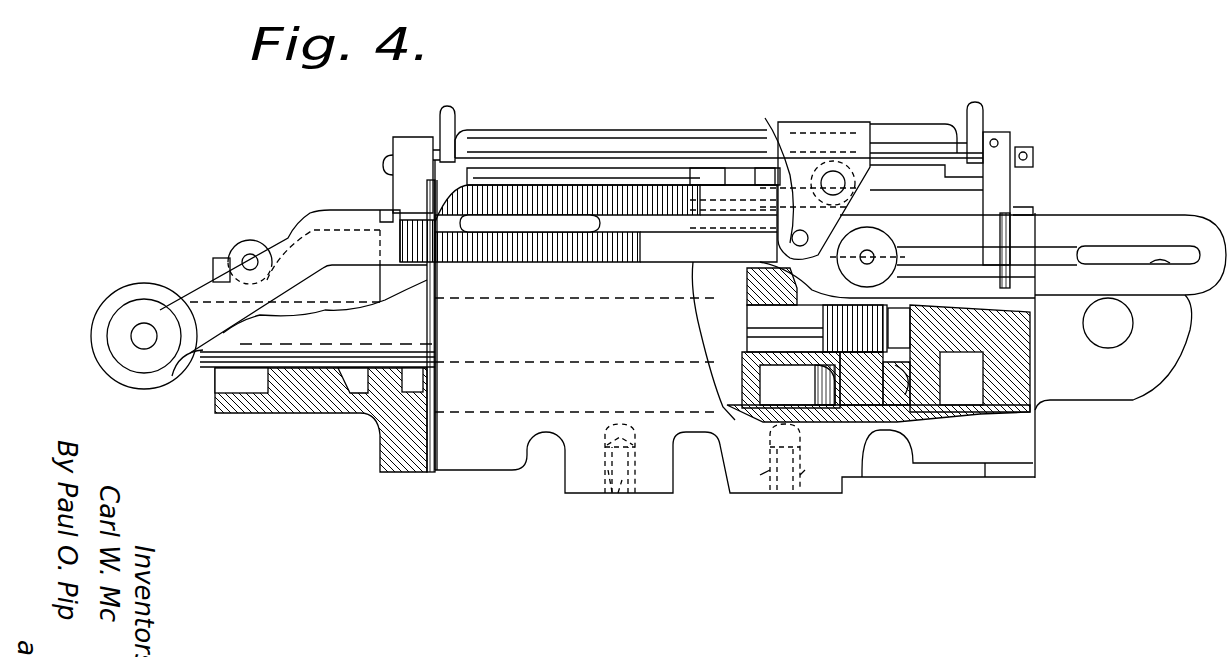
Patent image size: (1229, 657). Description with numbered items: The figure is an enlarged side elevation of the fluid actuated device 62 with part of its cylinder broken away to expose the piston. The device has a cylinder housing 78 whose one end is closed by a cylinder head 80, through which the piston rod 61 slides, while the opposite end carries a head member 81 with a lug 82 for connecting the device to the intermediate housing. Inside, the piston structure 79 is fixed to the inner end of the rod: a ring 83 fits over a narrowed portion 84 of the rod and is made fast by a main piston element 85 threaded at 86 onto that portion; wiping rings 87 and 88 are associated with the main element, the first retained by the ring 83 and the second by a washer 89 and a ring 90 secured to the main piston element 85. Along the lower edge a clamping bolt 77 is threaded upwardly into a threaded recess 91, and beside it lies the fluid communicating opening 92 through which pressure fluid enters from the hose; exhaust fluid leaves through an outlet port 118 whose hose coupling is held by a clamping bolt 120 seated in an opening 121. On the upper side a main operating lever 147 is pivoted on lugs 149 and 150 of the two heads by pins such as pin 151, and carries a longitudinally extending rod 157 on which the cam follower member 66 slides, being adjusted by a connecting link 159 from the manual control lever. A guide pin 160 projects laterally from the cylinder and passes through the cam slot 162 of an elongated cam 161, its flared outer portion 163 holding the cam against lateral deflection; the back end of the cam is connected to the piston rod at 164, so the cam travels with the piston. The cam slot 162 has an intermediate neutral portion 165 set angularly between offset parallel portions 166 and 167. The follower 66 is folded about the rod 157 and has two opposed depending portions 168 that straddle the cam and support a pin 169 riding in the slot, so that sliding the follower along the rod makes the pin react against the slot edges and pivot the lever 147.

The piston rod 61 is at (198, 370).
The fluid actuated device 62 is at (437, 470).
The cam follower member 66 is at (838, 108).
The clamping bolt 77 is at (780, 492).
The cylinder housing 78 is at (485, 450).
The piston structure 79 is at (1035, 332).
The cylinder head 80 is at (380, 462).
The head member 81 is at (1025, 447).
The lug 82 is at (1143, 396).
The ring 83 is at (760, 372).
The narrowed portion 84 is at (750, 323).
The main piston element 85 is at (866, 422).
The threads 86 is at (880, 305).
The wiping ring 87 is at (845, 445).
The wiping ring 88 is at (895, 421).
The washer 89 is at (900, 385).
The ring 90 is at (920, 372).
The threaded recess 91 is at (768, 482).
The fluid communicating opening 92 is at (805, 482).
The outlet port 118 is at (603, 435).
The clamping bolt 120 is at (615, 495).
The opening 121 is at (590, 490).
The main operating lever 147 is at (513, 130).
The lug 149 is at (413, 145).
The lug 150 is at (1045, 117).
The pin 151 is at (385, 160).
The rod 157 is at (545, 145).
The connecting link 159 is at (315, 212).
The guide pin 160 is at (870, 252).
The cam 161 is at (1058, 218).
The cam slot 162 is at (1098, 248).
The flared outer portion 163 is at (895, 255).
The connection 164 is at (143, 322).
The neutral portion 165 is at (712, 244).
The offset parallel portion 166 is at (600, 232).
The offset parallel portion 167 is at (1165, 247).
The depending portions 168 is at (759, 169).
The pin 169 is at (775, 247).